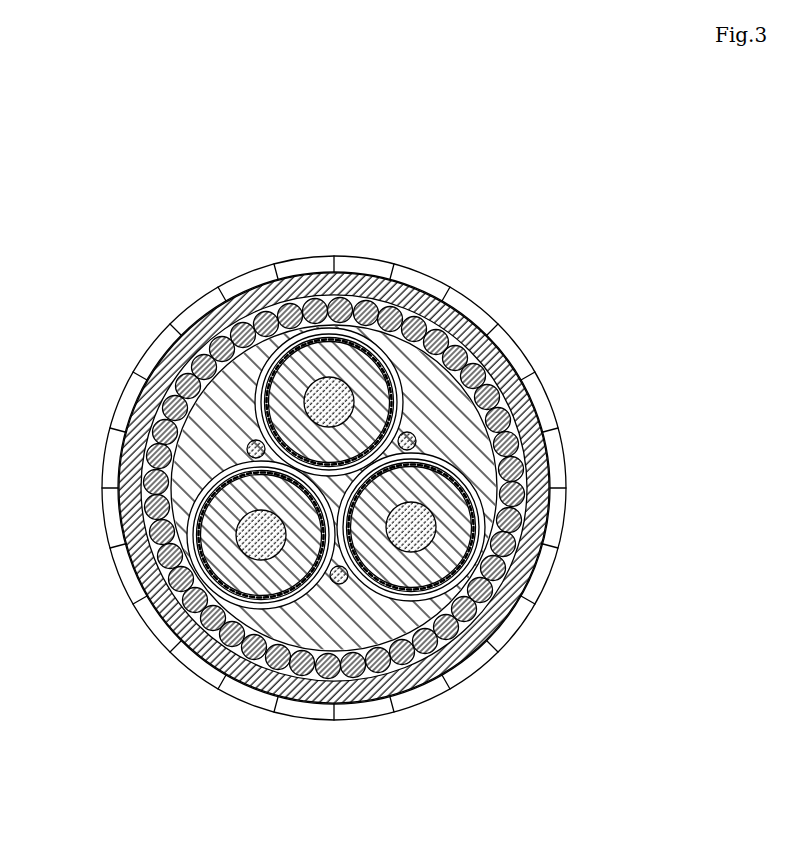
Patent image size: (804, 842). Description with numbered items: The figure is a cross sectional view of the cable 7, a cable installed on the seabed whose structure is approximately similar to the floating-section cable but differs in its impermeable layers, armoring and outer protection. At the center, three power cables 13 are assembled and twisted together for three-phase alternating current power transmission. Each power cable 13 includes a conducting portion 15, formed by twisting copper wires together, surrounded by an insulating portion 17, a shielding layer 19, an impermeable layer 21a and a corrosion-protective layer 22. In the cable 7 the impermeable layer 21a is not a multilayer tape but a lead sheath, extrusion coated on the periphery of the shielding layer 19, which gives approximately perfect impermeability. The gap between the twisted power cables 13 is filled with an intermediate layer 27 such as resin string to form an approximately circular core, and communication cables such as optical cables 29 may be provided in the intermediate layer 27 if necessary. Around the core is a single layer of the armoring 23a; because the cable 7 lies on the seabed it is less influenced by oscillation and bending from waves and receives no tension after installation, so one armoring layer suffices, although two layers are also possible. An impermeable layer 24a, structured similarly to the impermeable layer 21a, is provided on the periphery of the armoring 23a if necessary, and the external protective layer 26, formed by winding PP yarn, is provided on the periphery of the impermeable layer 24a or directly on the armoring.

The cable 7 is at (412, 185).
The power cable 13 is at (403, 275).
The conducting portion 15 is at (338, 396).
The insulating portion 17 is at (374, 413).
The shielding layer 19 is at (398, 432).
The impermeable layer 21a is at (462, 466).
The corrosion-protective layer 22 is at (527, 470).
The armoring 23a is at (494, 583).
The impermeable layer 24a is at (185, 628).
The external protective layer 26 is at (320, 722).
The intermediate layer 27 is at (418, 666).
The optical cable 29 is at (244, 643).